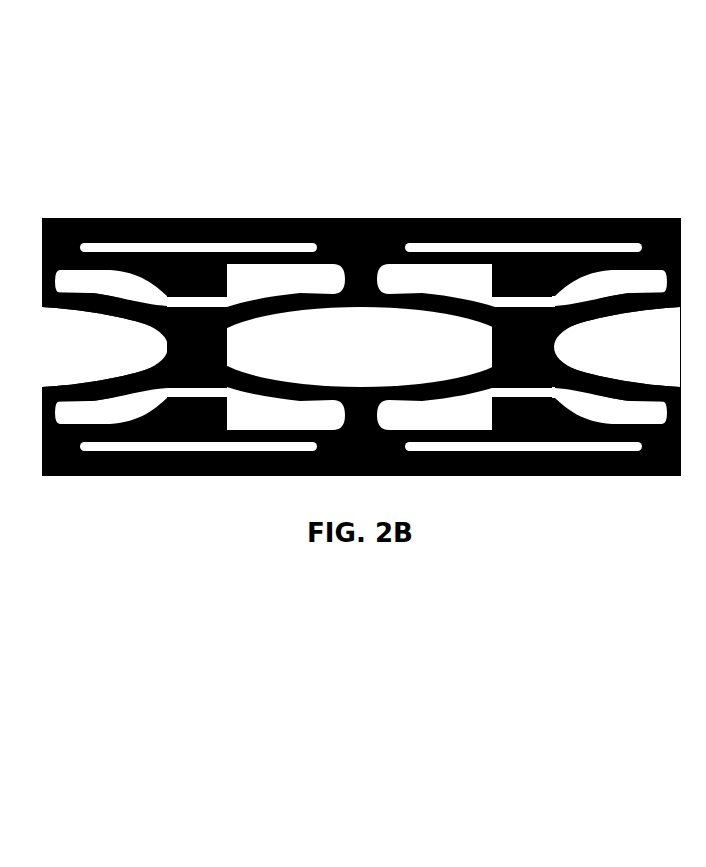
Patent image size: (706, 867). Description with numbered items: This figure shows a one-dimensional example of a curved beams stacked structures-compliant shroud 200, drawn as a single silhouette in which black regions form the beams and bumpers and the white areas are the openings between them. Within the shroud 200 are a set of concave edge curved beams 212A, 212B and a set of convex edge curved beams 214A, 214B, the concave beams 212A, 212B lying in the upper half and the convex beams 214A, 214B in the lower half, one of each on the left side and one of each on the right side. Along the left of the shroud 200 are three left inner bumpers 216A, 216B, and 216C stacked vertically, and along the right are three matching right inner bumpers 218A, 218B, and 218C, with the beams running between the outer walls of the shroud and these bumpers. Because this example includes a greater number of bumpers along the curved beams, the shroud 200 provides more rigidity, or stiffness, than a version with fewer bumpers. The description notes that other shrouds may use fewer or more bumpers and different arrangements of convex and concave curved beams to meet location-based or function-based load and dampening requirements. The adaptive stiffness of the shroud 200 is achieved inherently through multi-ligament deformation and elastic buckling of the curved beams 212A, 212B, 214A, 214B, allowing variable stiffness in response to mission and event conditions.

The curved beams stacked structures-compliant shroud 200 is at (297, 107).
The concave edge curved beam 212A is at (107, 312).
The concave edge curved beam 212B is at (613, 312).
The convex edge curved beam 214A is at (117, 379).
The convex edge curved beam 214B is at (617, 380).
The left inner bumper 216A is at (236, 293).
The left inner bumper 216B is at (230, 338).
The left inner bumper 216C is at (229, 398).
The right inner bumper 218A is at (488, 300).
The right inner bumper 218B is at (487, 352).
The right inner bumper 218C is at (488, 407).